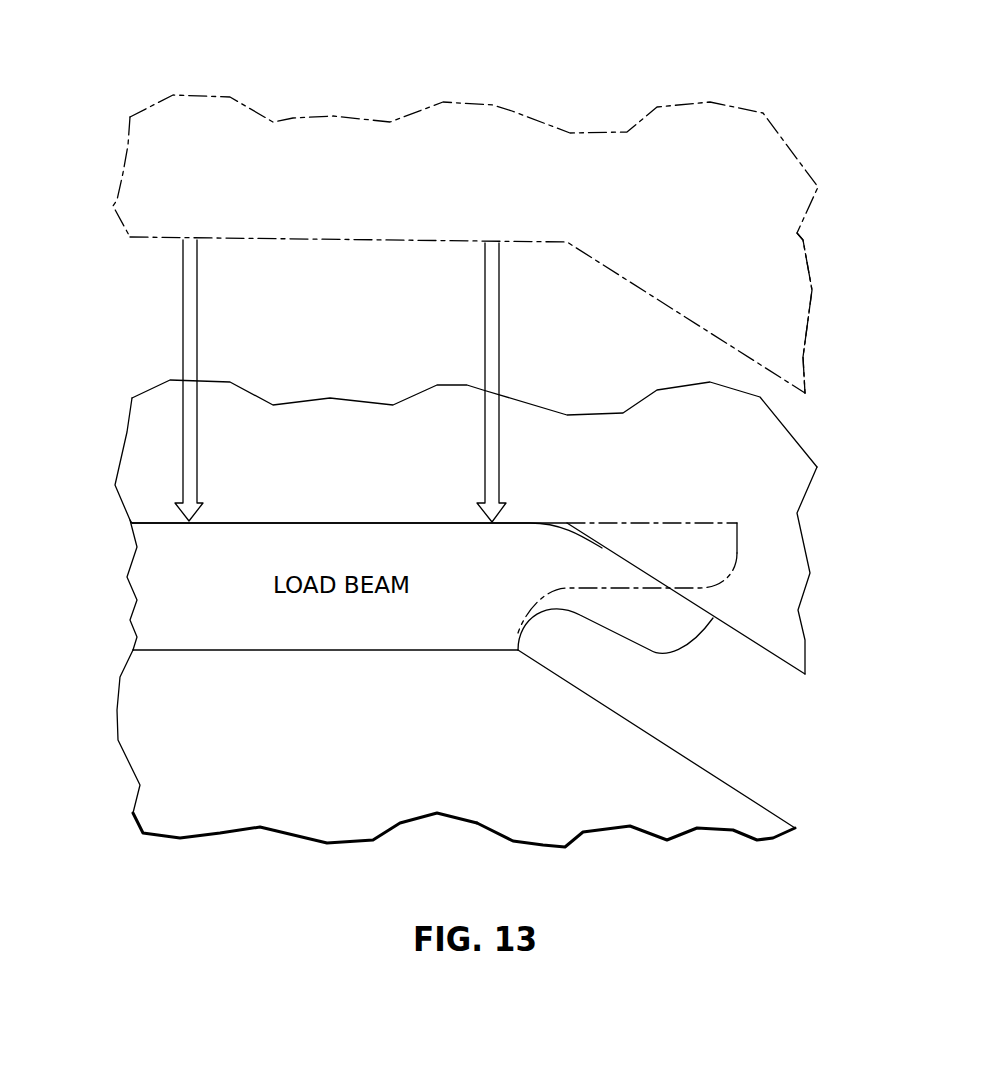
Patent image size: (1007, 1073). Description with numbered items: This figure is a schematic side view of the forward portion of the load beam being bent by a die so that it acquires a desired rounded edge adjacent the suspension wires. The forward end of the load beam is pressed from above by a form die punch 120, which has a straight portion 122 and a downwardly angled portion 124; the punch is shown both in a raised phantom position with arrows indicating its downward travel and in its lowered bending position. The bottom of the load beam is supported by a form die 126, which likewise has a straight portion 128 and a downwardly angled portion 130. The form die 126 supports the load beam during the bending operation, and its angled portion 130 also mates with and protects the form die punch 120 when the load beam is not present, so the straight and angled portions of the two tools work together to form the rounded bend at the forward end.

The form die punch 120 is at (665, 212).
The straight portion 122 is at (300, 135).
The downwardly angled portion 124 is at (783, 247).
The form die 126 is at (534, 760).
The straight portion 128 is at (216, 822).
The downwardly angled portion 130 is at (717, 821).